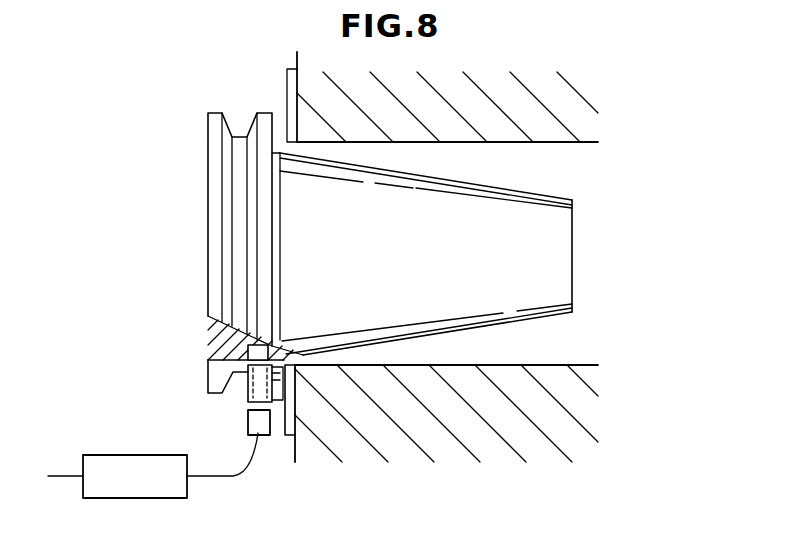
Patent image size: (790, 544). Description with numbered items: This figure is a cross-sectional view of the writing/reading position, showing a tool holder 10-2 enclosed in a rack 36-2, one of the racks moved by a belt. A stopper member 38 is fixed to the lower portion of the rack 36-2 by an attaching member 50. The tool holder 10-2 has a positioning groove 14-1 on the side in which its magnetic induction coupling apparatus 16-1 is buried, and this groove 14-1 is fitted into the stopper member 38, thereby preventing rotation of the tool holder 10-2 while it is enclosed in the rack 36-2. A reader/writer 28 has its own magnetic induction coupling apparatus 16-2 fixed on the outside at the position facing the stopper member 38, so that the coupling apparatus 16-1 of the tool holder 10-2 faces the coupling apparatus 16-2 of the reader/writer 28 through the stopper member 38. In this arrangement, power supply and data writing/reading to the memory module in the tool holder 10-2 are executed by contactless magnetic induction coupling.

The tool holder 10-2 is at (433, 248).
The rack 36-2 is at (542, 423).
The magnetic induction coupling apparatus 16-1 is at (240, 338).
The positioning groove 14-1 is at (216, 376).
The stopper member 38 is at (246, 402).
The magnetic induction coupling apparatus 16-2 is at (262, 436).
The attaching member 50 is at (292, 424).
The reader/writer 28 is at (130, 455).